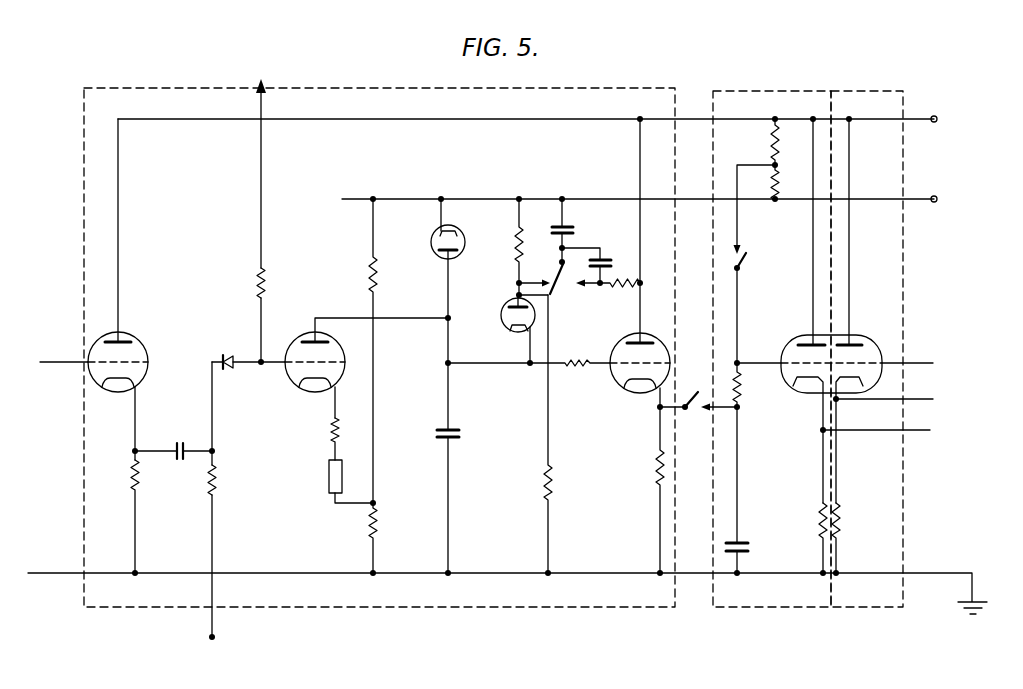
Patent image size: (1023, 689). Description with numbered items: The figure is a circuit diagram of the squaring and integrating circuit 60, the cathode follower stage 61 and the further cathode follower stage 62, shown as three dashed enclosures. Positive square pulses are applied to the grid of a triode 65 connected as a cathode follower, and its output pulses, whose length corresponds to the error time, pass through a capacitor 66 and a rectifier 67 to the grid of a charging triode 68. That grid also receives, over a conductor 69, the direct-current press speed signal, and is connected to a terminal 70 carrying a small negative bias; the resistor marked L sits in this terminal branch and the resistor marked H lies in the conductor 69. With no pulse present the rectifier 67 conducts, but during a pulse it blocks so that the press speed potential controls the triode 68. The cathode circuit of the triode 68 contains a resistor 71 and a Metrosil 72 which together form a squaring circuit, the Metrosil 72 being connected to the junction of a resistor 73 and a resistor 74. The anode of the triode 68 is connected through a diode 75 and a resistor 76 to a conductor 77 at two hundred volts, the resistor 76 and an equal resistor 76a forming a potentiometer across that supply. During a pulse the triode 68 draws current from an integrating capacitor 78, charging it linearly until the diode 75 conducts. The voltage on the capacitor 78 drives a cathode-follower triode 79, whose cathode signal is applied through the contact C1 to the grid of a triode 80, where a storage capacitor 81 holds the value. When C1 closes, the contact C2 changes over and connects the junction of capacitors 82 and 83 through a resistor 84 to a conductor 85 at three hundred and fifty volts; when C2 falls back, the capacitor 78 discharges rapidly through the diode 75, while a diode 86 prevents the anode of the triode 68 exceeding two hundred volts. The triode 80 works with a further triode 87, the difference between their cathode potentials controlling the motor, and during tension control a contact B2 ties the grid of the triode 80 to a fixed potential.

The squaring and integrating circuit 60 is at (293, 89).
The cathode follower stage 61 is at (730, 91).
The further cathode follower stage 62 is at (848, 91).
The triode 65 is at (130, 339).
The capacitor 66 is at (174, 450).
The rectifier 67 is at (224, 357).
The charging triode 68 is at (298, 339).
The conductor 69 is at (263, 178).
The terminal 70 is at (215, 637).
The resistor 71 is at (330, 426).
The Metrosil 72 is at (329, 476).
The resistor 73 is at (378, 271).
The resistor 74 is at (378, 521).
The diode 75 is at (501, 312).
The resistor 76 is at (515, 243).
The resistor 76a is at (553, 479).
The conductor 77 is at (576, 199).
The integrating capacitor 78 is at (462, 432).
The triode 79 is at (662, 339).
The triode 80 is at (803, 336).
The storage capacitor 81 is at (745, 539).
The capacitor 82 is at (568, 226).
The capacitor 83 is at (605, 258).
The resistor 84 is at (617, 290).
The conductor 85 is at (603, 121).
The diode 86 is at (432, 243).
The further triode 87 is at (852, 339).
The resistor H is at (248, 283).
The resistor L is at (220, 480).
The contact C1 is at (698, 393).
The contact C2 is at (542, 277).
The contact B2 is at (748, 259).